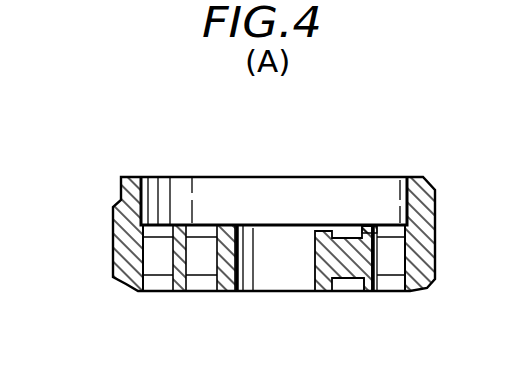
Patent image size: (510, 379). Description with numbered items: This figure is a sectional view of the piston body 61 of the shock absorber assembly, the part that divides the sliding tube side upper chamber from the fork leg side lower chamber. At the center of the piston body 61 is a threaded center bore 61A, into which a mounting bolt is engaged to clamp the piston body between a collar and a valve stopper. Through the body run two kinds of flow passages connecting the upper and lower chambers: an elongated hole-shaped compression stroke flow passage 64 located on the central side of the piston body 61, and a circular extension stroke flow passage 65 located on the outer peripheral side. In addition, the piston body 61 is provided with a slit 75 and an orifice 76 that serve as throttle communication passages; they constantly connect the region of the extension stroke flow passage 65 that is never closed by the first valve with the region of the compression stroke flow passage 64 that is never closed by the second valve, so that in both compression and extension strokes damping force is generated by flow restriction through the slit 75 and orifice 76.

The piston body 61 is at (110, 228).
The threaded center bore 61A is at (243, 272).
The compression stroke flow passage 64 is at (203, 268).
The extension stroke flow passage 65 is at (390, 272).
The slit 75 is at (368, 228).
The orifice 76 is at (373, 272).